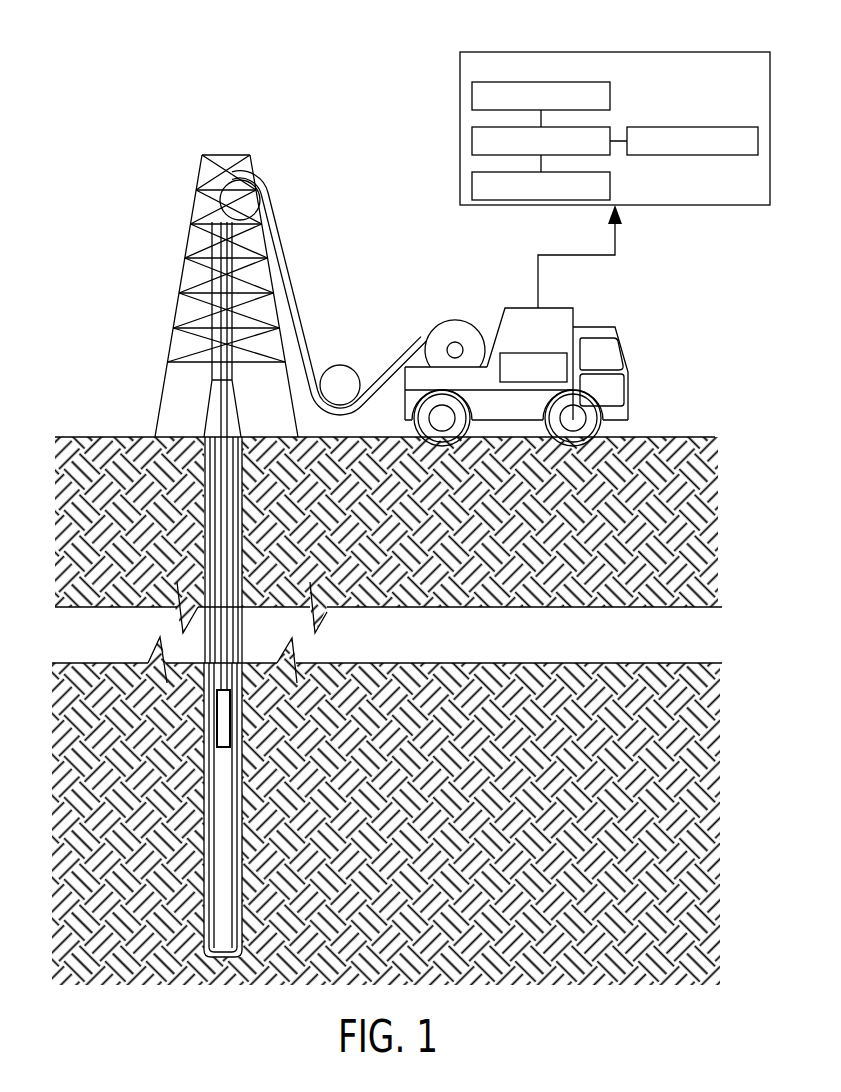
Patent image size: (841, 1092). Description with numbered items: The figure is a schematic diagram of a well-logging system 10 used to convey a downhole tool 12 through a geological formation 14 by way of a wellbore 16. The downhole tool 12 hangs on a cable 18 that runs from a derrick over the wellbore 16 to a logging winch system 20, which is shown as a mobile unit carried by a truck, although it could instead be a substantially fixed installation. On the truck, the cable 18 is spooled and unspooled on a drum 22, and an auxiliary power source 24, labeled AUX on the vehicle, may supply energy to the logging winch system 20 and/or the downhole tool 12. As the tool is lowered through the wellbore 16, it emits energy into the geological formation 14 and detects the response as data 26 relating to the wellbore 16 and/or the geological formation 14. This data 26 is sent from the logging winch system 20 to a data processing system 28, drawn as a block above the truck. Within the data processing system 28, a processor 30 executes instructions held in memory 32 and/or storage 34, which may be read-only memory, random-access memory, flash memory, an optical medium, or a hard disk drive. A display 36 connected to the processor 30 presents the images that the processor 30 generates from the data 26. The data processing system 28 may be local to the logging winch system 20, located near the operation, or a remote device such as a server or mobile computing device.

The well-logging system 10 is at (131, 208).
The downhole tool 12 is at (205, 702).
The geological formation 14 is at (62, 760).
The wellbore 16 is at (201, 484).
The cable 18 is at (306, 289).
The logging winch system 20 is at (519, 305).
The drum 22 is at (448, 322).
The auxiliary power source 24 is at (535, 354).
The data 26 is at (616, 236).
The data processing system 28 is at (596, 121).
The processor 30 is at (592, 128).
The memory 32 is at (472, 93).
The storage 34 is at (608, 187).
The display 36 is at (694, 127).